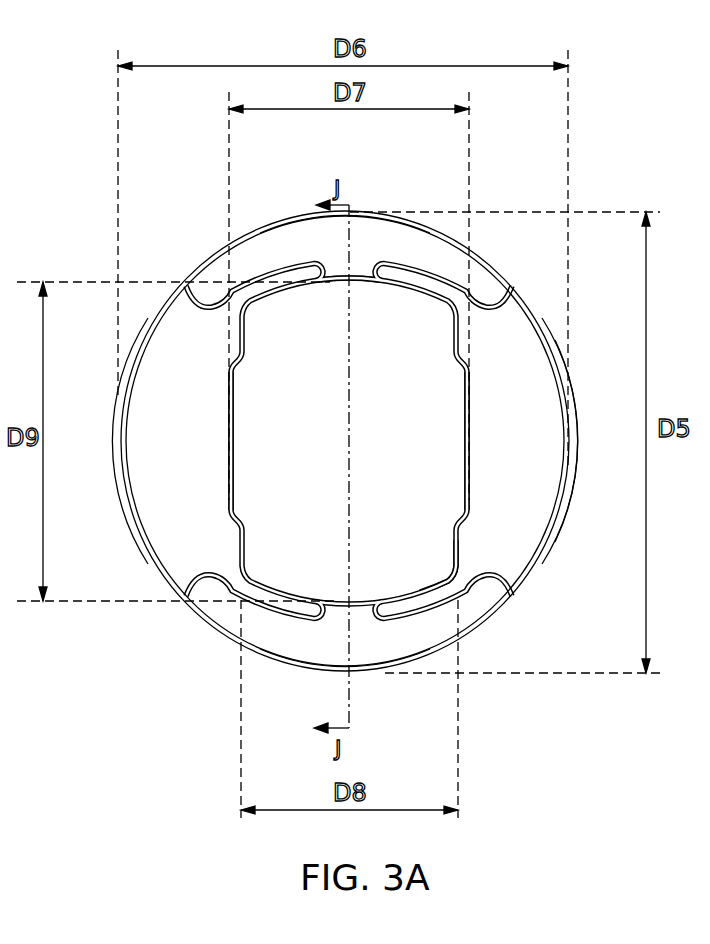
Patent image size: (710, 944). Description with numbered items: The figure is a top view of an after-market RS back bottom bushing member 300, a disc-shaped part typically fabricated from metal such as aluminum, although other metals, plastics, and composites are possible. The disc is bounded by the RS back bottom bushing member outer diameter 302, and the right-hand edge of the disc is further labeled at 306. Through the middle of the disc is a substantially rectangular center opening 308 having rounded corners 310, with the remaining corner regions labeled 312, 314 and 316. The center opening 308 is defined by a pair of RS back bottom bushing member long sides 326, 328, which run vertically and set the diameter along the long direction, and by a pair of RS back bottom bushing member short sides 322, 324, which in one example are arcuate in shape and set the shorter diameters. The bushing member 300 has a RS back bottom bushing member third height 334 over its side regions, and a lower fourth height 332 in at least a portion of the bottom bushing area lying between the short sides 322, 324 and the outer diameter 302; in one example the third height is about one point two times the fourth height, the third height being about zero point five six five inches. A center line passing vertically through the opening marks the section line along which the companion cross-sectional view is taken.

The RS back bottom bushing member 300 is at (100, 138).
The RS back bottom bushing member outer diameter 302 is at (493, 258).
The outer peripheral surface 306 is at (548, 423).
The center opening 308 is at (325, 572).
The rounded corners 310 is at (231, 583).
The lower-right corner notch 312 is at (455, 572).
The upper-right corner notch 314 is at (451, 305).
The upper-left corner notch 316 is at (238, 296).
The RS back bottom bushing member short side 322 is at (341, 276).
The RS back bottom bushing member short side 324 is at (393, 616).
The RS back bottom bushing member long side 326 is at (226, 427).
The RS back bottom bushing member long side 328 is at (468, 442).
The fourth height 332 is at (304, 237).
The RS back bottom bushing member third height 334 is at (160, 357).